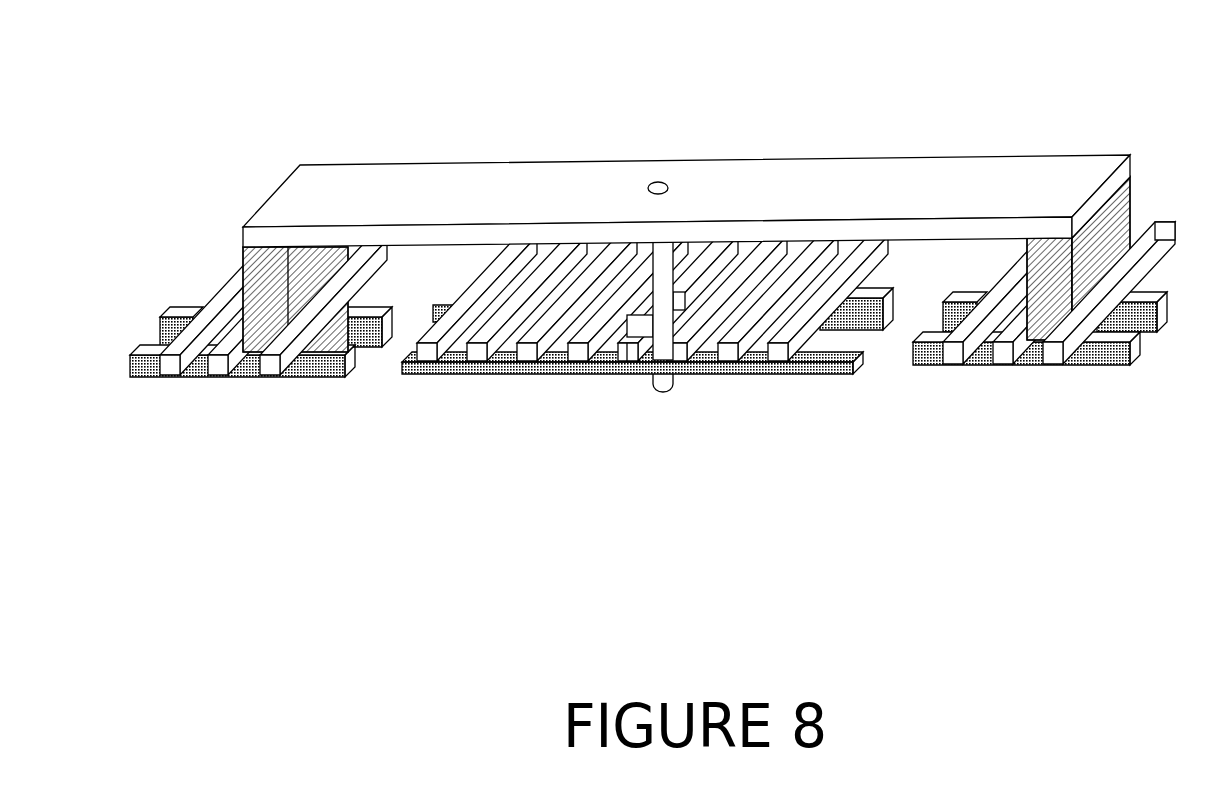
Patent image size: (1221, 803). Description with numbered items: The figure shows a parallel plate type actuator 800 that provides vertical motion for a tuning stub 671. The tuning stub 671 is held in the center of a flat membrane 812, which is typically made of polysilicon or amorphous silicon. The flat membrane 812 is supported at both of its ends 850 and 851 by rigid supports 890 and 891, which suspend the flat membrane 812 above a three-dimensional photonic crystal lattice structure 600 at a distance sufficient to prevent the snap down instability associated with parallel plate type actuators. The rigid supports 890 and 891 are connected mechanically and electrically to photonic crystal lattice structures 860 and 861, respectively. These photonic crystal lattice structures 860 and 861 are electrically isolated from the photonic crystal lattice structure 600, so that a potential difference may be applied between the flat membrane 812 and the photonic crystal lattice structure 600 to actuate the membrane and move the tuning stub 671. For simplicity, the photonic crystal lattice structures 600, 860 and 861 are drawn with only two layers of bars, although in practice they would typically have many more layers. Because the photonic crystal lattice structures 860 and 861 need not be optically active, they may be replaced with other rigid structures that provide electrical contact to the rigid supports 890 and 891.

The parallel plate type actuator 800 is at (694, 78).
The flat membrane 812 is at (443, 180).
The end of flat membrane 850 is at (1130, 163).
The end of flat membrane 851 is at (277, 190).
The photonic crystal lattice structure 860 is at (1076, 384).
The photonic crystal lattice structure 861 is at (277, 390).
The rigid support 890 is at (1029, 357).
The rigid support 891 is at (243, 375).
The tuning stub 671 is at (625, 370).
The three-dimensional photonic crystal lattice structure 600 is at (776, 396).